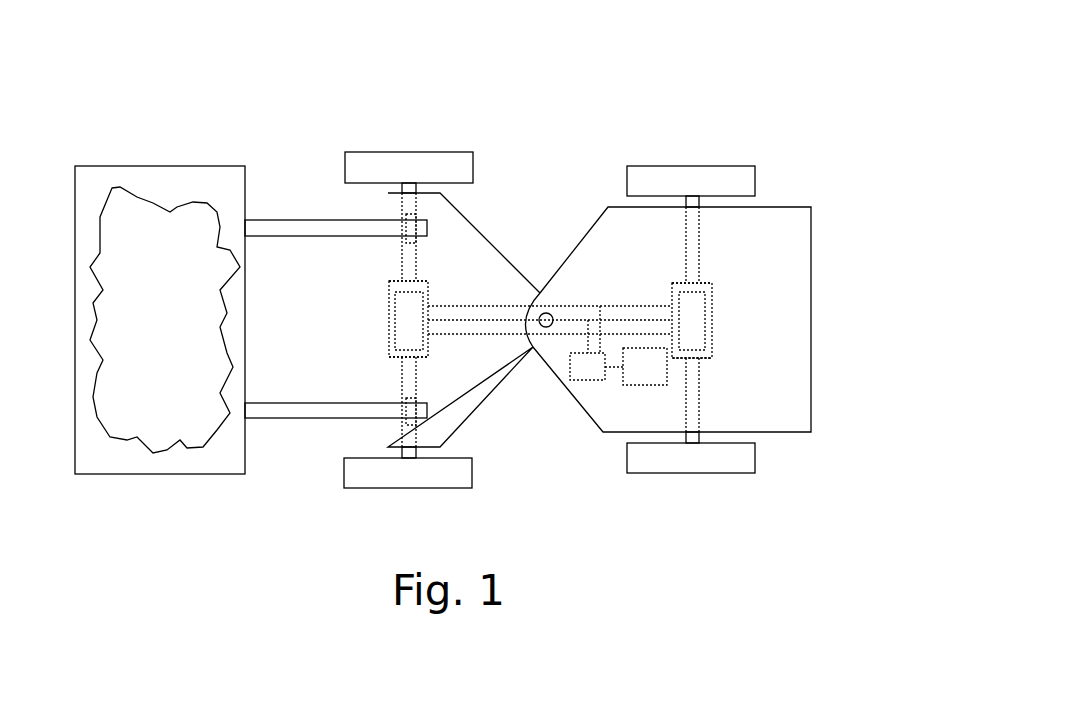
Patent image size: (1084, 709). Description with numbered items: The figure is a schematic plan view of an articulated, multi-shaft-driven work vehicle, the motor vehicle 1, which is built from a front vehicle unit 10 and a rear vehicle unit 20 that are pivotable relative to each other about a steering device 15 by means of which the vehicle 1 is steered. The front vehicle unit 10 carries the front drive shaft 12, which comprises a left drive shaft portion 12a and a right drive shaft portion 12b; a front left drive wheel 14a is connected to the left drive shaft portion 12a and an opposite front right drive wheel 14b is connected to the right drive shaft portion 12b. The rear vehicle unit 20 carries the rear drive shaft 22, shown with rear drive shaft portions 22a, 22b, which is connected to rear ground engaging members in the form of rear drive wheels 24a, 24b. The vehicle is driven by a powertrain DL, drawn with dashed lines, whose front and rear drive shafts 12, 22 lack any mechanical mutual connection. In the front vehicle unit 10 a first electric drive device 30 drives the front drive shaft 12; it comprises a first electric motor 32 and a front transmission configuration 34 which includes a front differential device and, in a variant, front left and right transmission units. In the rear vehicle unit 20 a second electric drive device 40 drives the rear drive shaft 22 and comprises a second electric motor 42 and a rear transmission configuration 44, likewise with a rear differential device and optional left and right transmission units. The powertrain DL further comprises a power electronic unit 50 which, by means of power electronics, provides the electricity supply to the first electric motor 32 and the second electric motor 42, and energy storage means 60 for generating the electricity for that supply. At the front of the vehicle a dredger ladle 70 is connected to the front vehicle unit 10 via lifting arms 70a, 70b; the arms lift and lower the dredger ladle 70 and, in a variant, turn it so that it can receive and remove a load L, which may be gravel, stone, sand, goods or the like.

The motor vehicle 1 is at (634, 60).
The front vehicle unit 10 is at (387, 382).
The front drive shaft 12 is at (344, 320).
The left drive shaft portion 12a is at (388, 442).
The right drive shaft portion 12b is at (402, 203).
The front left drive wheel 14a is at (365, 488).
The front right drive wheel 14b is at (405, 152).
The steering device 15 is at (546, 328).
The rear vehicle unit 20 is at (607, 205).
The rear drive shaft 22 is at (777, 291).
The rear drive shaft portion 22a is at (700, 392).
The rear drive shaft portion 22b is at (700, 240).
The rear drive wheel 24a is at (690, 473).
The rear drive wheel 24b is at (690, 166).
The first electric drive device 30 is at (413, 309).
The first electric motor 32 is at (398, 311).
The front transmission configuration 34 is at (398, 281).
The second electric drive device 40 is at (669, 280).
The second electric motor 42 is at (705, 325).
The rear transmission configuration 44 is at (712, 295).
The power electronic unit 50 is at (590, 381).
The energy storage means 60 is at (645, 386).
The dredger ladle 70 is at (160, 166).
The lifting arm 70a is at (325, 418).
The lifting arm 70b is at (280, 220).
The load L is at (168, 453).
The powertrain DL is at (645, 345).